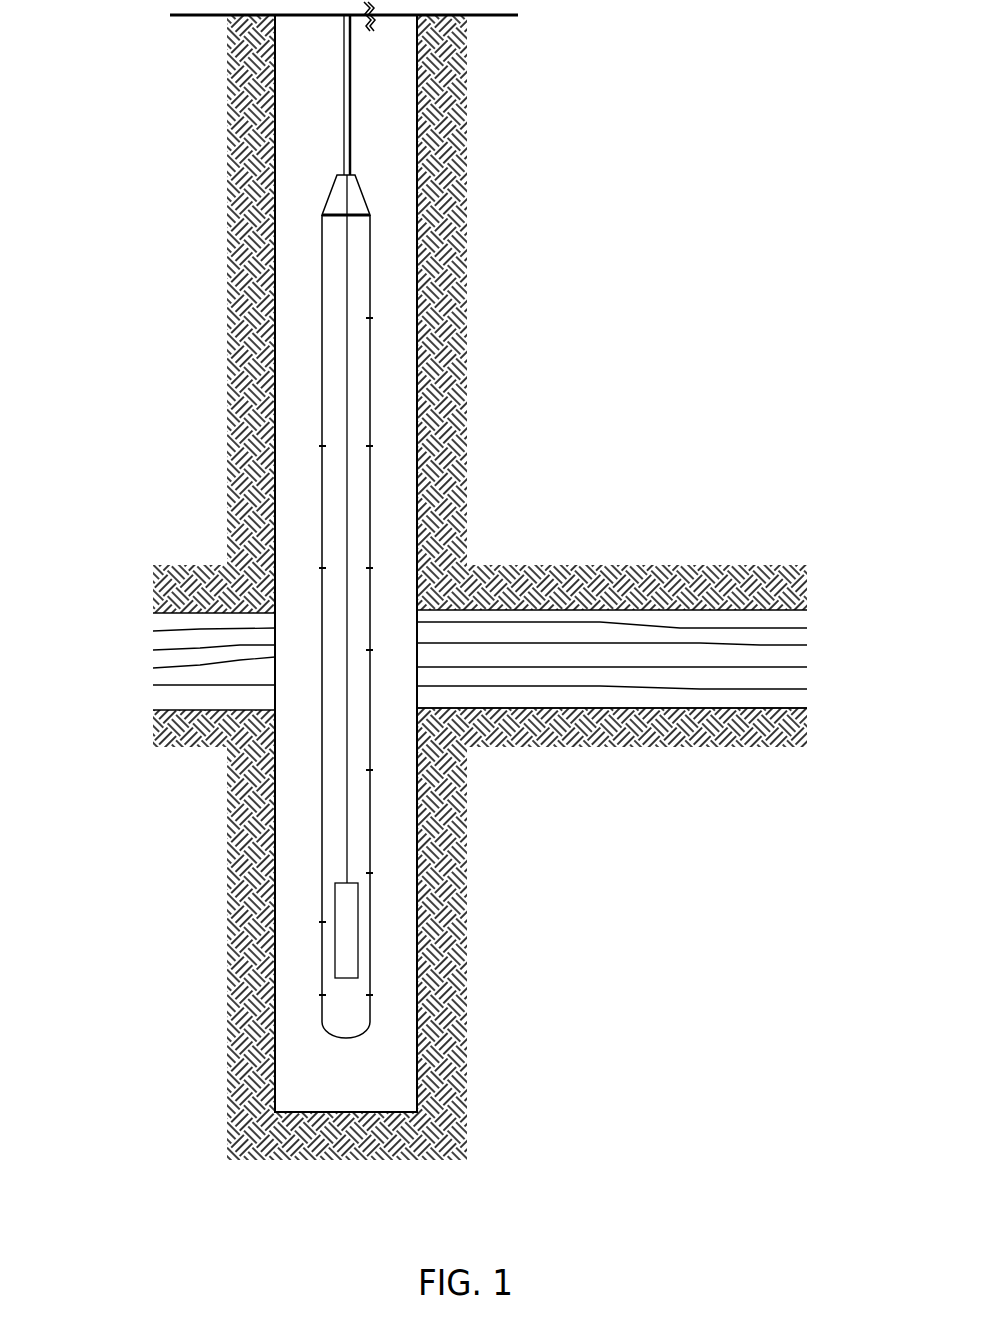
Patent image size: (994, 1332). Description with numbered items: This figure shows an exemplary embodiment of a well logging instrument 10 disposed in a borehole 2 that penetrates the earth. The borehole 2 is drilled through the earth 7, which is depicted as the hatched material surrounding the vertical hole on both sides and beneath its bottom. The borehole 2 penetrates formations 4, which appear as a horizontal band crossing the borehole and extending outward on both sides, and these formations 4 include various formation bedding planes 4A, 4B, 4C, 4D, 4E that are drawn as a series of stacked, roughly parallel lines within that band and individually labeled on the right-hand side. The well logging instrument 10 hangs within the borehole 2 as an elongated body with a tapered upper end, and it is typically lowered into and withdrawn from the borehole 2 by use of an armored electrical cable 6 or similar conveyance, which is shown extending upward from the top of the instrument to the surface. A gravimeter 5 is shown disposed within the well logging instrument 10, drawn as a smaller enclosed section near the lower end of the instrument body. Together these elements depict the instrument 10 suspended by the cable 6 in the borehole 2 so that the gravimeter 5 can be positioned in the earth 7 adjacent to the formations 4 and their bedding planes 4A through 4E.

The borehole 2 is at (395, 90).
The formations 4 is at (475, 665).
The formation bedding plane 4A is at (807, 614).
The formation bedding plane 4B is at (810, 635).
The formation bedding plane 4C is at (810, 652).
The formation bedding plane 4D is at (810, 675).
The formation bedding plane 4E is at (810, 695).
The gravimeter 5 is at (335, 930).
The armored electrical cable 6 is at (345, 98).
The earth 7 is at (445, 944).
The well logging instrument 10 is at (325, 606).